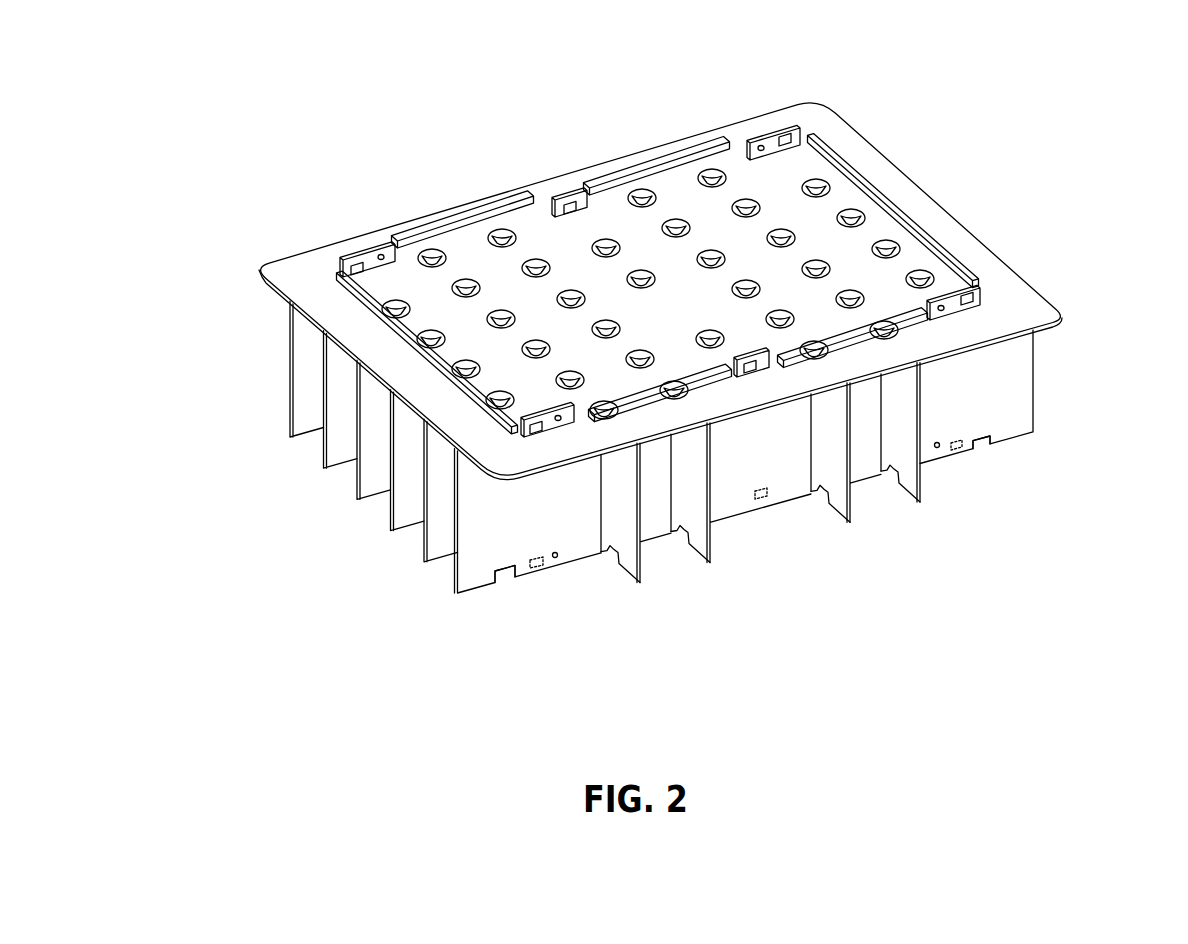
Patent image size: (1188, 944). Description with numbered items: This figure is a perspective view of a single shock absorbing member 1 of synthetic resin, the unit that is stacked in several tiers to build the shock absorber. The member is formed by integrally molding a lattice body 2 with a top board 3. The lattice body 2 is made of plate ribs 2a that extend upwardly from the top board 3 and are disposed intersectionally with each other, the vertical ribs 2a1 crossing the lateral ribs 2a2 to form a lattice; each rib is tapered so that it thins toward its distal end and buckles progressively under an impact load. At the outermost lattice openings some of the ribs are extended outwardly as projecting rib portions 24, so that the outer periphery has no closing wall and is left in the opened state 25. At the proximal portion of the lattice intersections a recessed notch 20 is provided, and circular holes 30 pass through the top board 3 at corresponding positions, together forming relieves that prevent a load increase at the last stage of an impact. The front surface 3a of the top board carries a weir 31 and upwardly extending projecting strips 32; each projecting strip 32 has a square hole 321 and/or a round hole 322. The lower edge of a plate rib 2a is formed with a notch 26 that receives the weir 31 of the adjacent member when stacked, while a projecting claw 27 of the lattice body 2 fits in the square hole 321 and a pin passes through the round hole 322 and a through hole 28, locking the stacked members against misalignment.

The shock absorbing member 1 is at (660, 355).
The lattice body 2 is at (660, 492).
The plate rib 2a is at (660, 492).
The vertical rib 2a1 is at (528, 521).
The lateral rib 2a2 is at (291, 405).
The top board 3 is at (677, 291).
The front surface of the top board 3a is at (972, 253).
The recessed notch 20 is at (683, 254).
The projecting rib portion 24 is at (640, 583).
The opened state 25 is at (410, 497).
The notch 26 is at (508, 580).
The projecting claw 27 is at (545, 570).
The through hole 28 is at (560, 560).
The circular hole 30 is at (854, 212).
The weir 31 is at (461, 224).
The projecting strip 32 is at (368, 262).
The square hole 321 is at (354, 266).
The round hole 322 is at (382, 256).